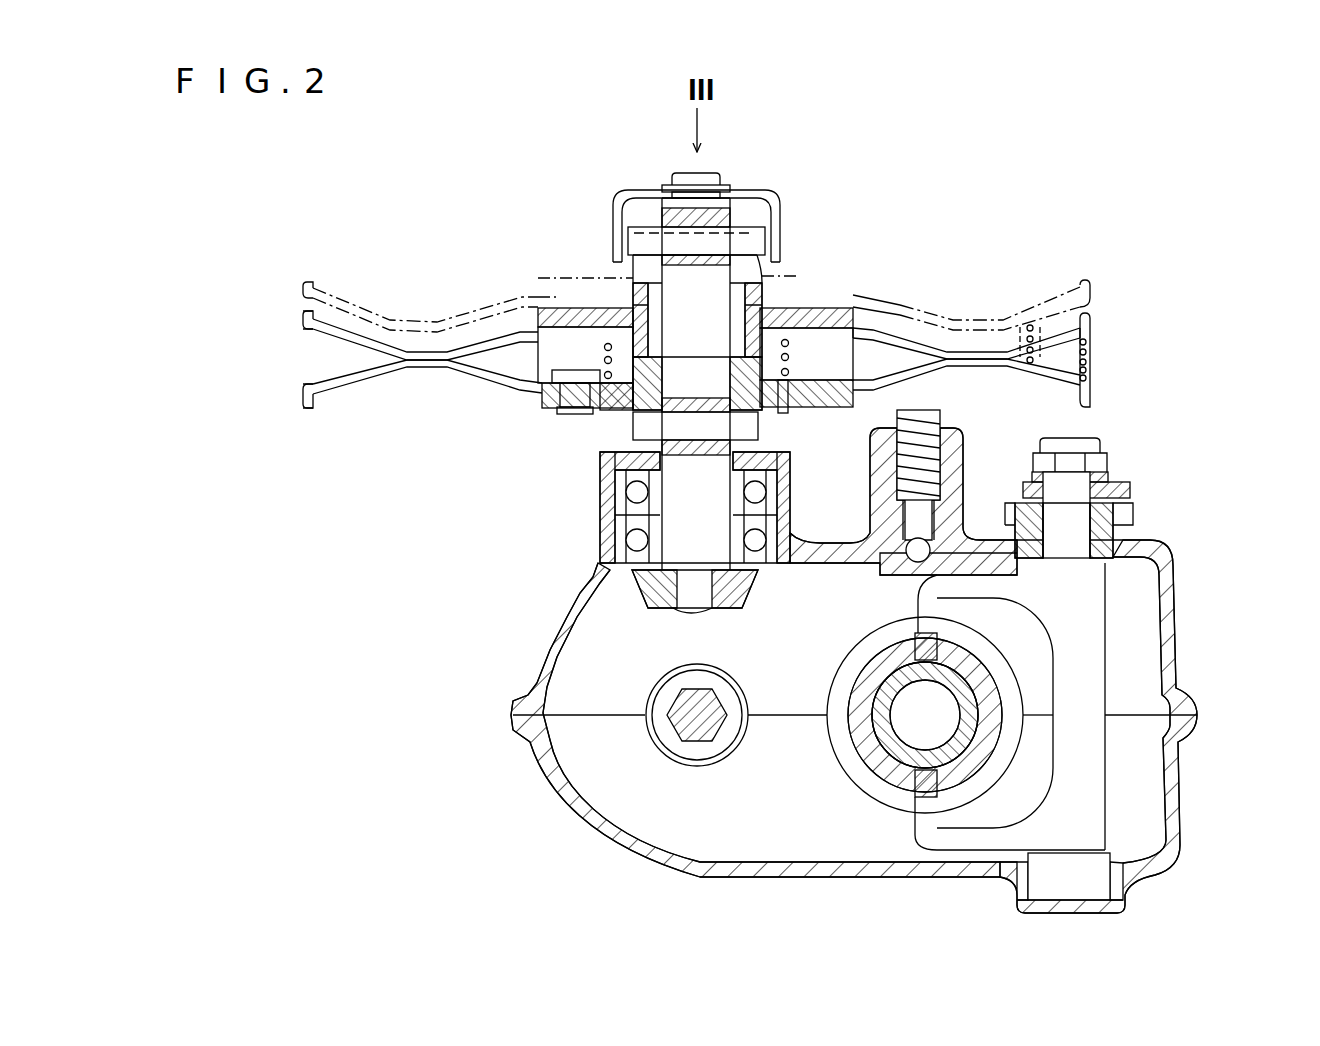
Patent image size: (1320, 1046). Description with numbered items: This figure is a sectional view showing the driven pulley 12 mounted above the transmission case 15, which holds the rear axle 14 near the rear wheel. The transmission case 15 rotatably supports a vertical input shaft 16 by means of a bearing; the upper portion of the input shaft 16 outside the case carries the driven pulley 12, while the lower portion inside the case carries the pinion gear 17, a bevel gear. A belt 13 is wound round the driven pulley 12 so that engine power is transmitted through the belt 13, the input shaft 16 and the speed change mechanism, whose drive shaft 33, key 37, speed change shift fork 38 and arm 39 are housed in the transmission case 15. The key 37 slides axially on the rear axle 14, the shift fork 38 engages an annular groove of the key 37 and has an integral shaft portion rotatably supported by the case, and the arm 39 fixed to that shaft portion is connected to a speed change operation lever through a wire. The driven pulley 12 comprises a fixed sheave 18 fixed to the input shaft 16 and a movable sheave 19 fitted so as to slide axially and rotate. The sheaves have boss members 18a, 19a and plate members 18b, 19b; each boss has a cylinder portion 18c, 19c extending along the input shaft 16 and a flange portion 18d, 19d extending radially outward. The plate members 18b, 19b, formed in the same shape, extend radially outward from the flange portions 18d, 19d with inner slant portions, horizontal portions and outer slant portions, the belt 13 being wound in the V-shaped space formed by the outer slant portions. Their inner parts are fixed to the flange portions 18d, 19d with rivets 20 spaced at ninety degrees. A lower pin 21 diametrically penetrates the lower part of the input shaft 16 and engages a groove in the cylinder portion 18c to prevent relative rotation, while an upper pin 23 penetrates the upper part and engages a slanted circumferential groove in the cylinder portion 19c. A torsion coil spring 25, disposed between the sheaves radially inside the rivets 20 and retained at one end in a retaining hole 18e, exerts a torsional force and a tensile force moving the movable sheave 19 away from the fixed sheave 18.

The driven pulley 12 is at (1010, 292).
The belt 13 is at (1087, 358).
The rear axle 14 is at (940, 728).
The transmission case 15 is at (1182, 582).
The input shaft 16 is at (711, 531).
The pinion gear 17 is at (748, 587).
The fixed sheave 18 is at (480, 396).
The boss member 18a is at (745, 388).
The plate member 18b is at (313, 382).
The cylinder portion 18c is at (623, 410).
The flange portion 18d is at (538, 405).
The retaining hole 18e is at (779, 413).
The movable sheave 19 is at (487, 300).
The boss member 19a is at (747, 313).
The plate member 19b is at (313, 337).
The cylinder portion 19c is at (633, 298).
The flange portion 19d is at (563, 308).
The rivets 20 is at (575, 373).
The lower pin 21 is at (643, 425).
The upper pin 23 is at (743, 238).
The torsion coil spring 25 is at (792, 355).
The drive shaft 33 is at (688, 727).
The key 37 is at (847, 794).
The speed change shift fork 38 is at (1078, 618).
The arm 39 is at (1130, 488).